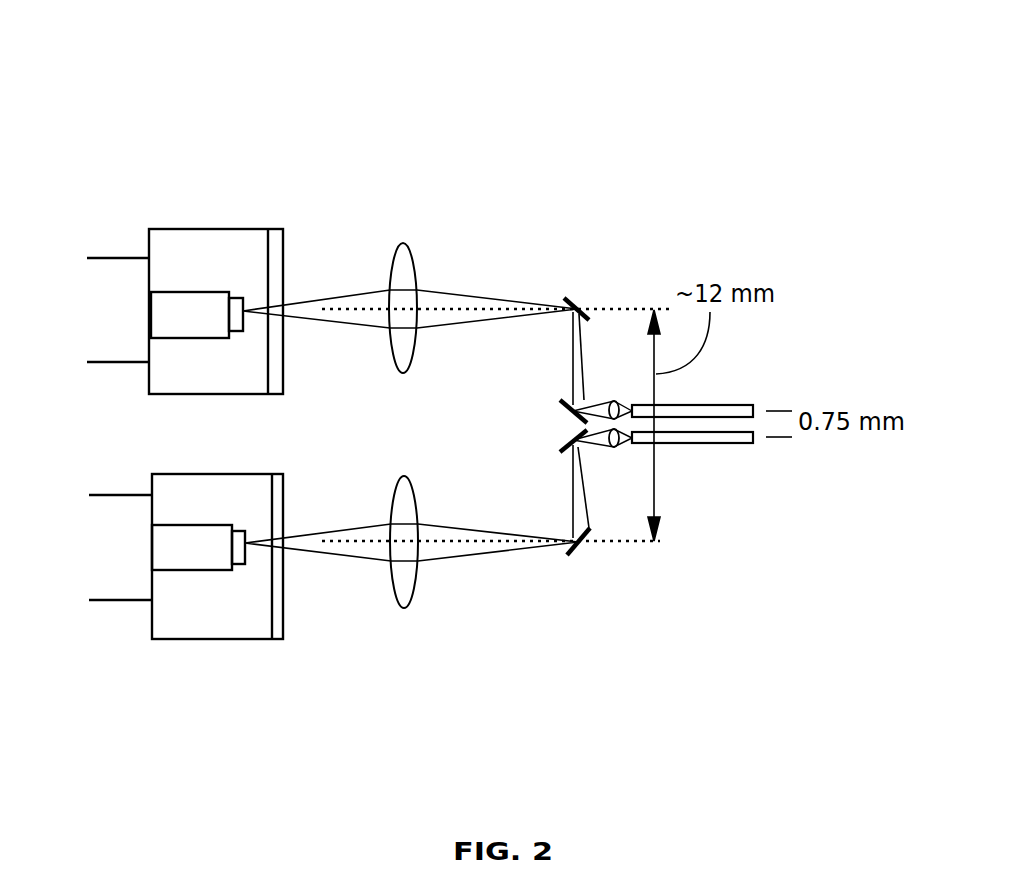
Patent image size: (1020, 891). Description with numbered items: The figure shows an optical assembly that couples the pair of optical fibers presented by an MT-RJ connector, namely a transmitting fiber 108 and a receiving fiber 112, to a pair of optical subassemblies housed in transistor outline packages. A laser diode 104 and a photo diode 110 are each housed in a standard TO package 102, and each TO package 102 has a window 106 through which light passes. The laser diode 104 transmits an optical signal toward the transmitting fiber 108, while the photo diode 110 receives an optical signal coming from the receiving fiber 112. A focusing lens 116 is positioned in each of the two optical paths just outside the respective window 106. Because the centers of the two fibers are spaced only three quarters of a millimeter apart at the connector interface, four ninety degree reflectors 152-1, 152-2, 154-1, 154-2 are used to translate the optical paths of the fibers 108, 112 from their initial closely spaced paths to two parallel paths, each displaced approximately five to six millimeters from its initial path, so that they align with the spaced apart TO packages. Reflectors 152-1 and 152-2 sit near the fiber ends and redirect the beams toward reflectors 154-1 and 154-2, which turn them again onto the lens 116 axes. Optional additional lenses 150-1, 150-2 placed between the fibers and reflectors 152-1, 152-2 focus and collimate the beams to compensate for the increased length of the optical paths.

The TO package 102 is at (179, 229).
The laser diode 104 is at (237, 298).
The window 106 is at (280, 229).
The transmitting fiber 108 is at (710, 400).
The photo diode 110 is at (237, 565).
The receiving fiber 112 is at (707, 447).
The focusing lens 116 is at (410, 445).
The additional lens 150-1 is at (610, 395).
The additional lens 150-2 is at (610, 456).
The 90 degree reflector 152-1 is at (537, 409).
The 90 degree reflector 152-2 is at (537, 445).
The 90 degree reflector 154-1 is at (589, 292).
The 90 degree reflector 154-2 is at (596, 559).